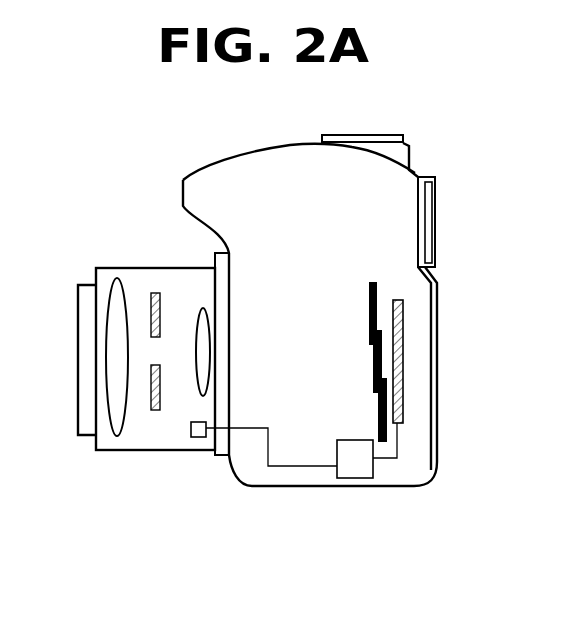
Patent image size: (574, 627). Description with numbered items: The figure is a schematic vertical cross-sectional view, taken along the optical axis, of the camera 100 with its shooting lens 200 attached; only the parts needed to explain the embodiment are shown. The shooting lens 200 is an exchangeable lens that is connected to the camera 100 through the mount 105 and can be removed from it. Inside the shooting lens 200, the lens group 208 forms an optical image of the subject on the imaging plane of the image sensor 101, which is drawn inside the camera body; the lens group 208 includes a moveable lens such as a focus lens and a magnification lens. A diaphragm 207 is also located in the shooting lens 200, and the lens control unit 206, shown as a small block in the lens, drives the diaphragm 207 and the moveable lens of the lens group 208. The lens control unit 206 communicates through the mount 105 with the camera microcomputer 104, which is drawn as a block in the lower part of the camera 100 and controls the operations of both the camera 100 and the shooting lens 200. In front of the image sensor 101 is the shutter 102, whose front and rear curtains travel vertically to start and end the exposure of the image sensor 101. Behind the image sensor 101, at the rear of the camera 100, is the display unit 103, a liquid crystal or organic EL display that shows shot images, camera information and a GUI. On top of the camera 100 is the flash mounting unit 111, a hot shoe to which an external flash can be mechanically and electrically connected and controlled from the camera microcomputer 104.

The camera 100 is at (168, 170).
The image sensor 101 is at (401, 372).
The shutter 102 is at (377, 295).
The display unit 103 is at (438, 318).
The camera microcomputer 104 is at (355, 479).
The mount 105 is at (219, 456).
The flash mounting unit 111 is at (375, 135).
The shooting lens 200 is at (70, 274).
The lens control unit 206 is at (197, 438).
The diaphragm 207 is at (151, 338).
The lens group 208 is at (204, 308).